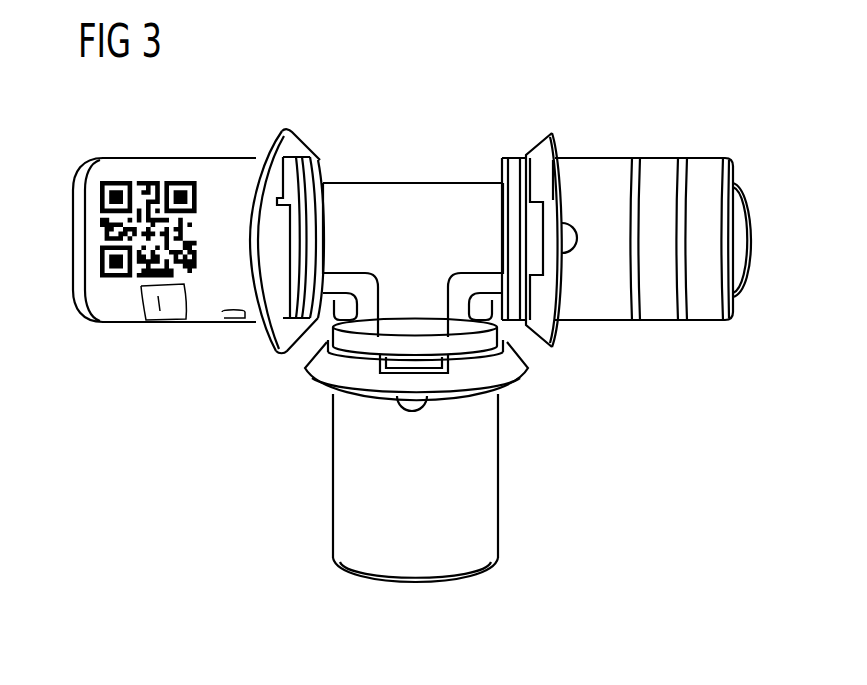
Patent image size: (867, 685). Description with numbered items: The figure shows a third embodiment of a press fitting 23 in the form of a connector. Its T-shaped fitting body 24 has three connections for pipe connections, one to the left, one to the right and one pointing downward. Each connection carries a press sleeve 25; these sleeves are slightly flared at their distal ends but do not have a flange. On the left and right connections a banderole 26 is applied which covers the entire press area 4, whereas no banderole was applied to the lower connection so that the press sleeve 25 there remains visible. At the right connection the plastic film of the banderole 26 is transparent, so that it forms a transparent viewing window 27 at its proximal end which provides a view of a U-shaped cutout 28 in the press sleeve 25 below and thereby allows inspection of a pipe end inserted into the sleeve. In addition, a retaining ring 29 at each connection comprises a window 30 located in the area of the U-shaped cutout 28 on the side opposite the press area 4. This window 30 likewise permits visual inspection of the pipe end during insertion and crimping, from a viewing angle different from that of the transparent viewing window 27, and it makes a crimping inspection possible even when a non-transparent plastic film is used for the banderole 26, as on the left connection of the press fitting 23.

The press area 4 is at (108, 131).
The press fitting 23 is at (185, 410).
The fitting body 24 is at (376, 184).
The press sleeve 25 is at (333, 456).
The banderole 26 is at (663, 326).
The transparent viewing window 27 is at (574, 200).
The U-shaped cutout 28 is at (408, 409).
The retaining ring 29 is at (300, 147).
The window 30 is at (303, 194).